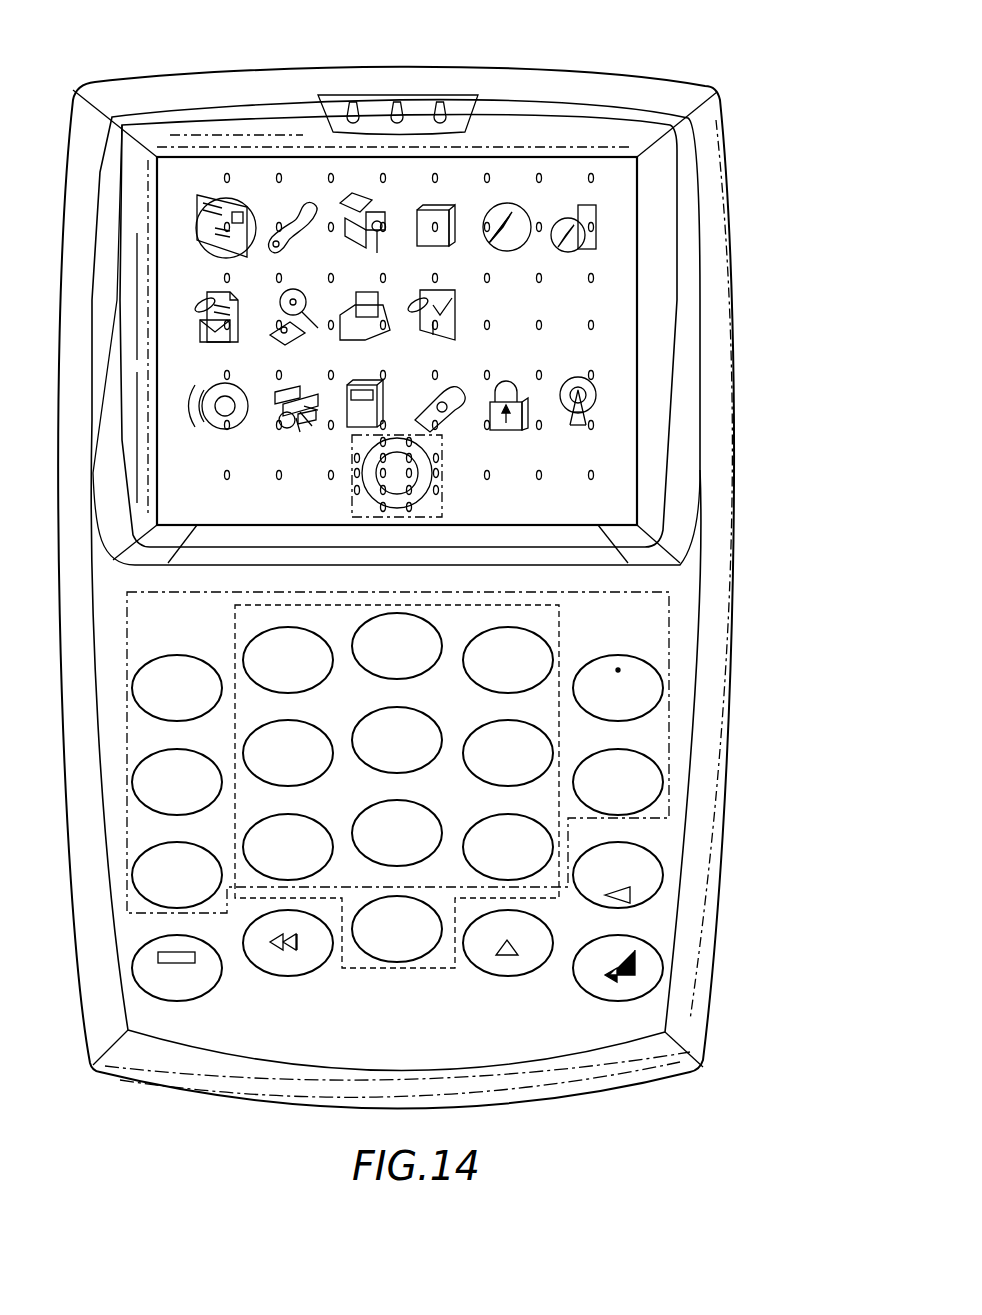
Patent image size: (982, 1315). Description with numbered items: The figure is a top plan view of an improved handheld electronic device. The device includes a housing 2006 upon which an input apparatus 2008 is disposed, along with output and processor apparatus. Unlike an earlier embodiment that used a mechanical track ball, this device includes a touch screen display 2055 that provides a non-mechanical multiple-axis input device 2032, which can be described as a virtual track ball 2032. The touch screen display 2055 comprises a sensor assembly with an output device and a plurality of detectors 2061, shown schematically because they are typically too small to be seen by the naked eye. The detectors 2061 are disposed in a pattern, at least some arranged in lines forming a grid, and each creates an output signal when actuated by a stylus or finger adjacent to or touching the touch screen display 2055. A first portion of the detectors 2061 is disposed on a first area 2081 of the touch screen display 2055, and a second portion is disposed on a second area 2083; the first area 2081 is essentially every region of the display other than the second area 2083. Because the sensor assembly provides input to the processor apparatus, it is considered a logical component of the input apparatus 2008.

The housing 2006 is at (597, 78).
The input apparatus 2008 is at (687, 605).
The non-mechanical multiple-axis input device 2032 is at (393, 507).
The touch screen display 2055 is at (522, 186).
The detectors 2061 is at (357, 492).
The first area 2081 is at (570, 469).
The second area 2083 is at (443, 505).